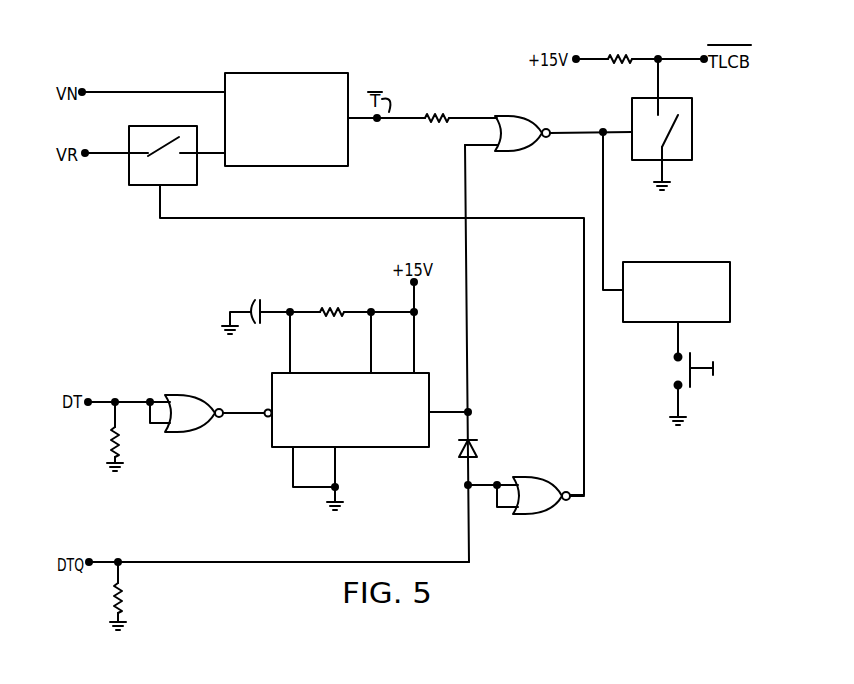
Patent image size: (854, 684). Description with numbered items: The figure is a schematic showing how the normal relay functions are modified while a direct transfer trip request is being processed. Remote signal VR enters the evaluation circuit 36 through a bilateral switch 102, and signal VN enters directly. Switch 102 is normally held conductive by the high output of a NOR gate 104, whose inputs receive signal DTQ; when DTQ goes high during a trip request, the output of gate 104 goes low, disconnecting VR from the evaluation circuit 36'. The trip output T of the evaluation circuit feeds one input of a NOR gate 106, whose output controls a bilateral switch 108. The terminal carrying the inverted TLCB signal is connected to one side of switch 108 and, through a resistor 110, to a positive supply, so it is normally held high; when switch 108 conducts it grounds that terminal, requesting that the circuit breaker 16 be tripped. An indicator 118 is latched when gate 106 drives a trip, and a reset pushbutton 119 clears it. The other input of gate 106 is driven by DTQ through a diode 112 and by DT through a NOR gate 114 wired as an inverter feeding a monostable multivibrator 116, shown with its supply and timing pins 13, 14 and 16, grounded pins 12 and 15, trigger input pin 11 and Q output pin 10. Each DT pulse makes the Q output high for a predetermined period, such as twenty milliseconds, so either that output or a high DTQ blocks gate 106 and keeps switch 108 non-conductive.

The evaluation circuit 36 is at (267, 110).
The evaluation circuit 36' is at (603, 493).
The bilateral switch 102 is at (177, 124).
The NOR gate 104 is at (527, 478).
The NOR gate 106 is at (520, 114).
The bilateral switch 108 is at (631, 110).
The resistor 110 is at (622, 52).
The diode 112 is at (480, 447).
The NOR gate 114 is at (187, 433).
The monostable multivibrator 116 is at (399, 448).
The indicator 118 is at (660, 260).
The reset pushbutton 119 is at (677, 372).
The multivibrator output pin Q 10 is at (448, 399).
The multivibrator input pin B 11 is at (247, 401).
The multivibrator pin 12 is at (303, 467).
The multivibrator pin 13 is at (403, 327).
The multivibrator pin 14 is at (300, 342).
The multivibrator pin 15 is at (339, 478).
The circuit breaker 16 is at (361, 342).